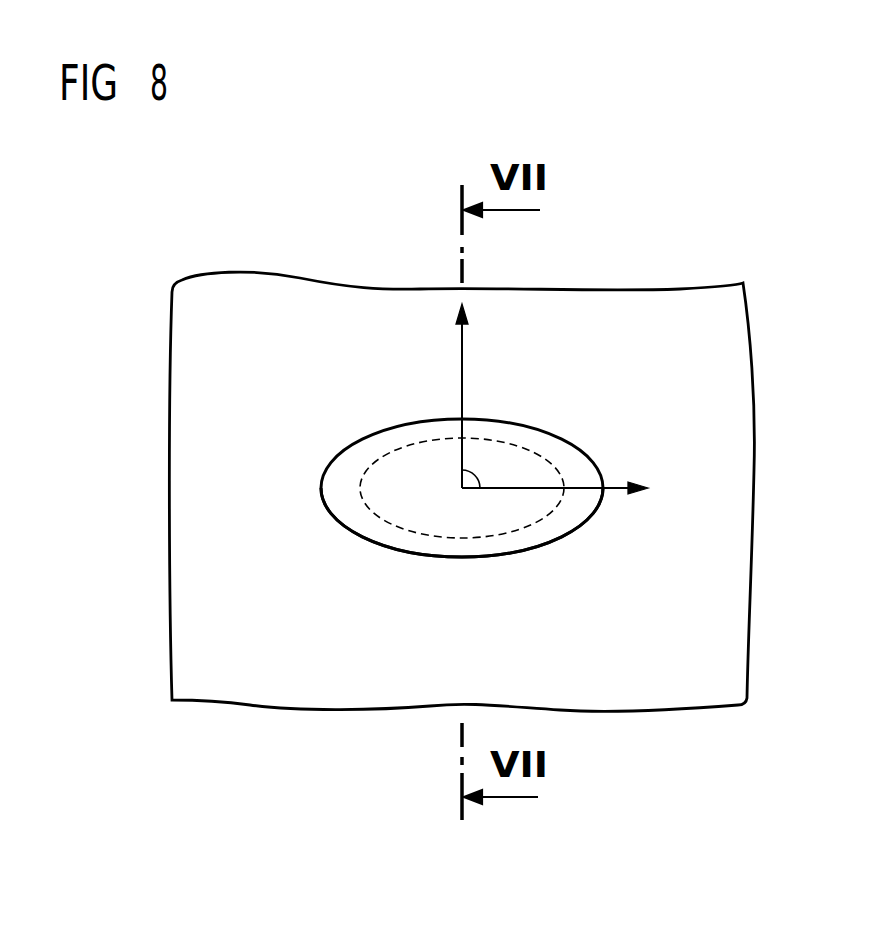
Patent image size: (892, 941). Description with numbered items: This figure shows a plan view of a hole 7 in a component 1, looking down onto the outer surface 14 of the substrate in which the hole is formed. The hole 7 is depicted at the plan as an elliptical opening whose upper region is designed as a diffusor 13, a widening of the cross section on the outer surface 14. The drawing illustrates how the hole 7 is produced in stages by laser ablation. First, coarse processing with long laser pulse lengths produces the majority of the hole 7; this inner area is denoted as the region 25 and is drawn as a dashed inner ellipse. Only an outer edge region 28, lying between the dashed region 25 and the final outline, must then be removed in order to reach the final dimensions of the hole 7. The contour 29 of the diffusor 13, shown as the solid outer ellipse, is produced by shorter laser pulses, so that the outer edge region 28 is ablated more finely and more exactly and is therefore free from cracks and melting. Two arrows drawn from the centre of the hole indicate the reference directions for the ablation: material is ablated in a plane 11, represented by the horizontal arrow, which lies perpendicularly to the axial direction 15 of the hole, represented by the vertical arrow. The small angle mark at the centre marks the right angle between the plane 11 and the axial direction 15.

The component 1 is at (138, 715).
The hole 7 is at (513, 426).
The diffusor 13 is at (481, 471).
The plane 11 is at (618, 492).
The outer surface 14 is at (718, 327).
The axial direction 15 is at (460, 370).
The region 25 is at (385, 503).
The outer edge region 28 is at (454, 553).
The contour 29 is at (345, 447).